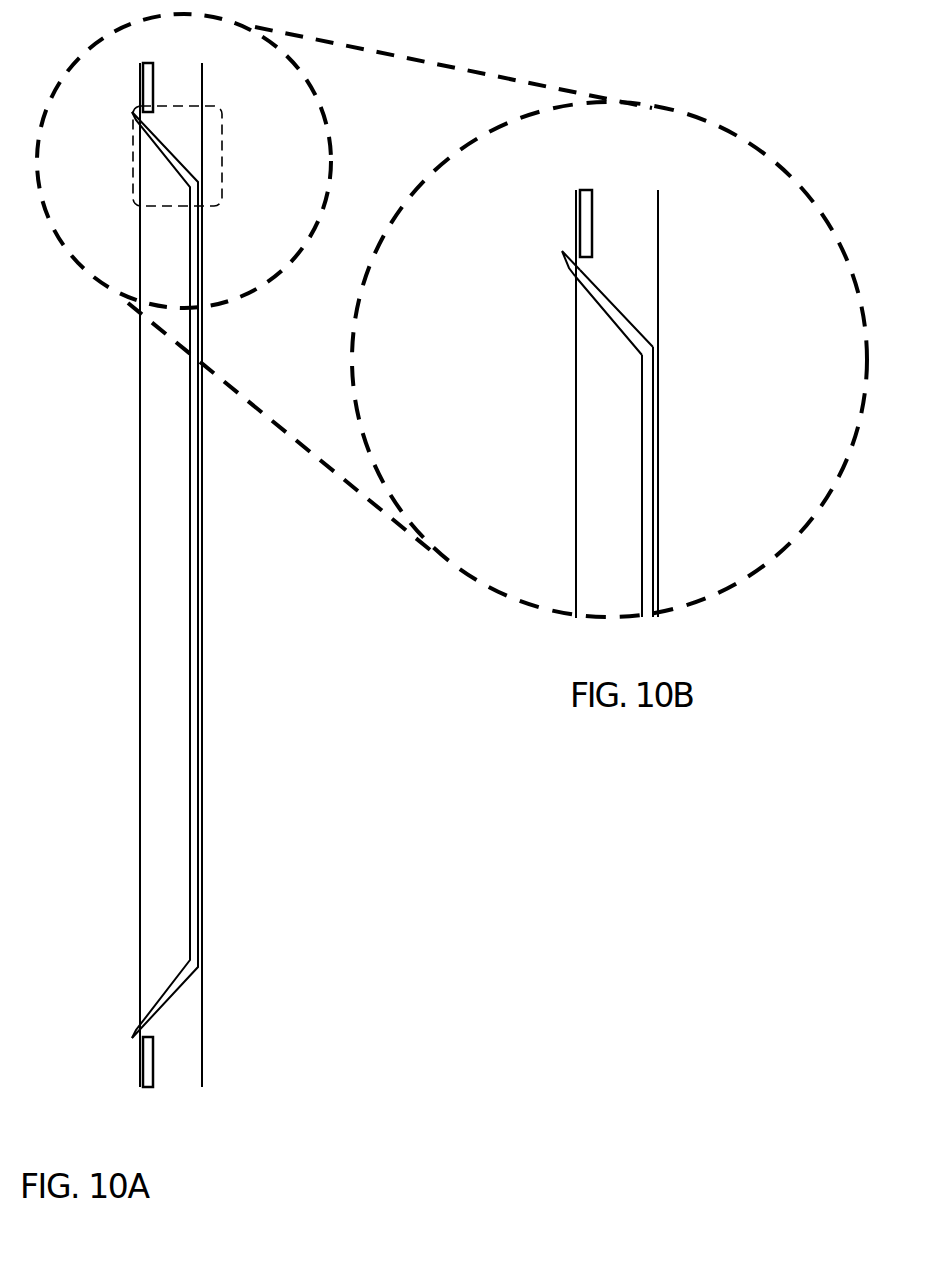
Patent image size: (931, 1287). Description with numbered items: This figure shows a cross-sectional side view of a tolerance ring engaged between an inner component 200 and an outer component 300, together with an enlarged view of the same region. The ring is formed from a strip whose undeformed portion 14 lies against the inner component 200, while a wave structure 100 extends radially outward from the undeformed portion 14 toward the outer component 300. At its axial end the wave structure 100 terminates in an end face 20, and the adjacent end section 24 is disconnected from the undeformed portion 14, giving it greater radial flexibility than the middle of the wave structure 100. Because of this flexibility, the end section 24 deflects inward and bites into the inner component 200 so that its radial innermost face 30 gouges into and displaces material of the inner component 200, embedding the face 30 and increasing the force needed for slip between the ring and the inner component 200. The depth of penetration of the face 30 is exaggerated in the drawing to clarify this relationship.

In FIG. 10A, the undeformed portion 14 is at (153, 1062).
In FIG. 10B, the undeformed portion 14 is at (592, 233).
In FIG. 10B, the end face 20 is at (612, 302).
In FIG. 10A, the end section 24 is at (132, 162).
In FIG. 10B, the radial innermost face 30 is at (564, 263).
In FIG. 10A, the wave structure 100 is at (198, 586).
In FIG. 10B, the wave structure 100 is at (608, 425).
In FIG. 10A, the inner component 200 is at (118, 751).
In FIG. 10B, the inner component 200 is at (542, 428).
In FIG. 10A, the second panel 300 is at (262, 851).
In FIG. 10B, the second panel 300 is at (762, 377).